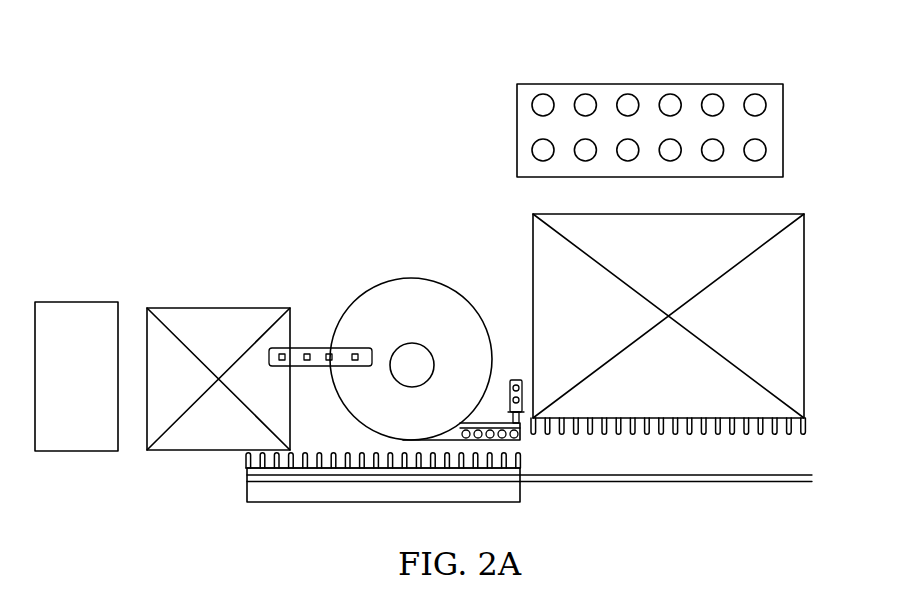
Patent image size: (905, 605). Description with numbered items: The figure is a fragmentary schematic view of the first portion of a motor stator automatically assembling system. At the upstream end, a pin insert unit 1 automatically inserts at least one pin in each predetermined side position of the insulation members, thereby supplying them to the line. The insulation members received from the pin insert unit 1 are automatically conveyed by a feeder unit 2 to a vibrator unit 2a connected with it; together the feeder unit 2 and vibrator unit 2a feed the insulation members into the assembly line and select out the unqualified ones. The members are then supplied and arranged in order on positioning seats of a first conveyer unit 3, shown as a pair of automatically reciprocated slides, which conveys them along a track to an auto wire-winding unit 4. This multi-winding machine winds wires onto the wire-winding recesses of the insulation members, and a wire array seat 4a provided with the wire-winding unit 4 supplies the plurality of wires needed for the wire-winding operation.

The pin insert unit 1 is at (88, 306).
The feeder unit 2 is at (245, 312).
The vibrator unit 2a is at (414, 283).
The first conveyer unit 3 is at (517, 490).
The auto wire-winding unit 4 is at (780, 222).
The wire array seat 4a is at (696, 92).